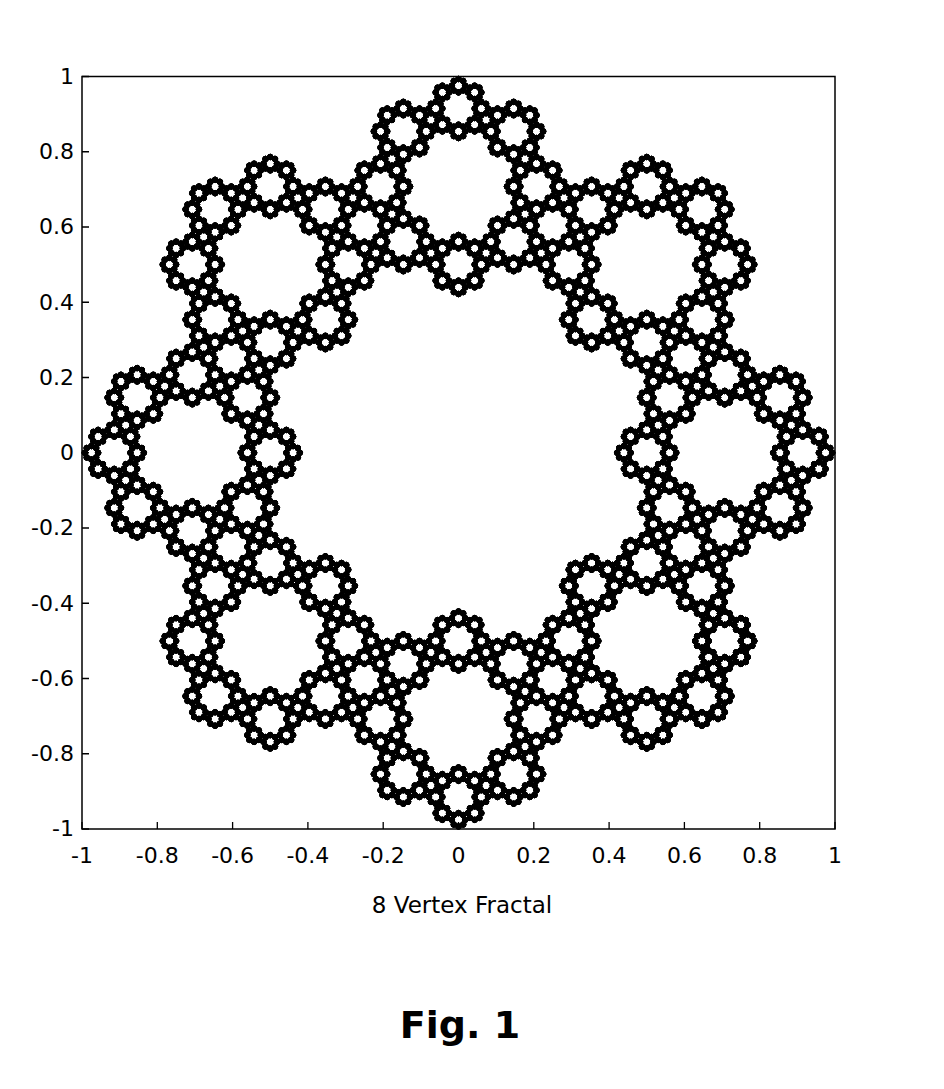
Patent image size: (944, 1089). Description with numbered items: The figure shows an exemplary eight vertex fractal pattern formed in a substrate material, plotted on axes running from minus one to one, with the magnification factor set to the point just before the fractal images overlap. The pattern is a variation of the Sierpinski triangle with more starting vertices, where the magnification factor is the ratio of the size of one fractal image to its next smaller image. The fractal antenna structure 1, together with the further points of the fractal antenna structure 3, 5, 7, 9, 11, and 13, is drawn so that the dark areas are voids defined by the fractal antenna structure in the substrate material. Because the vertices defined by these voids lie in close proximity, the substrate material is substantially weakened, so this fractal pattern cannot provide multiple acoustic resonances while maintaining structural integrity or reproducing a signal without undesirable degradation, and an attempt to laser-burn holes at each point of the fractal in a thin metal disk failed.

The fractal antenna structure 1 is at (592, 213).
The fractal antenna structure 3 is at (744, 338).
The fractal antenna structure 5 is at (765, 365).
The fractal antenna structure 7 is at (410, 465).
The fractal antenna structure 9 is at (622, 656).
The fractal antenna structure 11 is at (720, 641).
The fractal antenna structure 13 is at (445, 71).